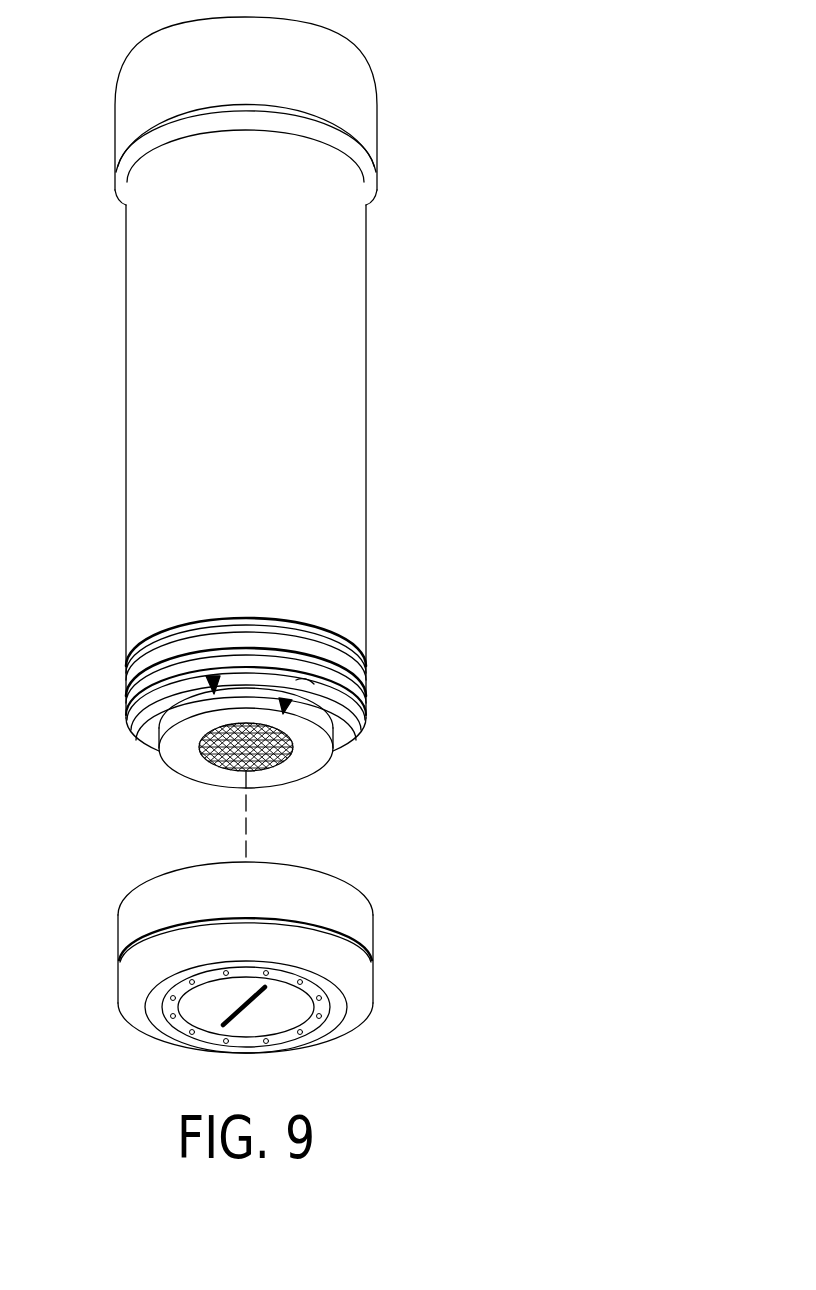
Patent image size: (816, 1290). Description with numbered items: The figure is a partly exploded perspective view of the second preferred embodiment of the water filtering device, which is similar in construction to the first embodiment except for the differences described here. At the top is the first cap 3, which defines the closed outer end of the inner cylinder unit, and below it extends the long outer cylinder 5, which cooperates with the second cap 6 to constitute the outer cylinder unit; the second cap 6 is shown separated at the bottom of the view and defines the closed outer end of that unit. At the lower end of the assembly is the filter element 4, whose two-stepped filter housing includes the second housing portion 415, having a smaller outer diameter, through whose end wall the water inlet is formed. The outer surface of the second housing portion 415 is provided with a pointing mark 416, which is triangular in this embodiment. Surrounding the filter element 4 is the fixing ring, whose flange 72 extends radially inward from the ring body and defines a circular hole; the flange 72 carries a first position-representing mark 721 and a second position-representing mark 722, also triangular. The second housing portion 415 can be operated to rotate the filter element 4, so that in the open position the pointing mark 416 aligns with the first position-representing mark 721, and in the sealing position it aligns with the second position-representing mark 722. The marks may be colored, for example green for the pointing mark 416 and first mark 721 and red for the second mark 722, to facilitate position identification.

The first cap 3 is at (377, 63).
The outer cylinder 5 is at (366, 355).
The filter element 4 is at (234, 695).
The flange 72 is at (343, 738).
The first position-representing mark 721 is at (213, 682).
The second position-representing mark 722 is at (300, 678).
The pointing mark 416 is at (292, 700).
The second housing portion 415 is at (182, 740).
The second cap 6 is at (385, 1008).